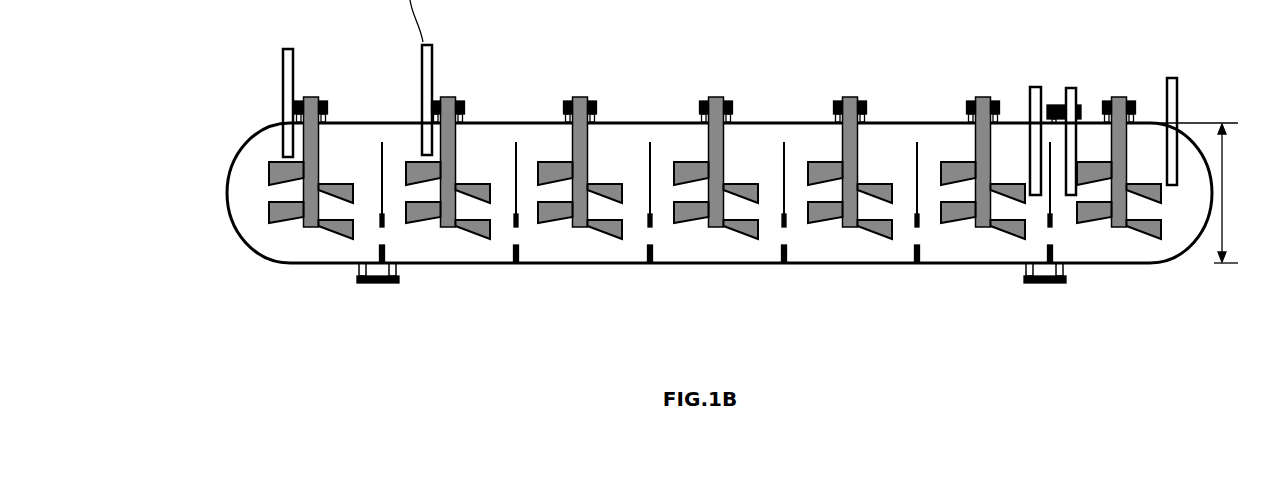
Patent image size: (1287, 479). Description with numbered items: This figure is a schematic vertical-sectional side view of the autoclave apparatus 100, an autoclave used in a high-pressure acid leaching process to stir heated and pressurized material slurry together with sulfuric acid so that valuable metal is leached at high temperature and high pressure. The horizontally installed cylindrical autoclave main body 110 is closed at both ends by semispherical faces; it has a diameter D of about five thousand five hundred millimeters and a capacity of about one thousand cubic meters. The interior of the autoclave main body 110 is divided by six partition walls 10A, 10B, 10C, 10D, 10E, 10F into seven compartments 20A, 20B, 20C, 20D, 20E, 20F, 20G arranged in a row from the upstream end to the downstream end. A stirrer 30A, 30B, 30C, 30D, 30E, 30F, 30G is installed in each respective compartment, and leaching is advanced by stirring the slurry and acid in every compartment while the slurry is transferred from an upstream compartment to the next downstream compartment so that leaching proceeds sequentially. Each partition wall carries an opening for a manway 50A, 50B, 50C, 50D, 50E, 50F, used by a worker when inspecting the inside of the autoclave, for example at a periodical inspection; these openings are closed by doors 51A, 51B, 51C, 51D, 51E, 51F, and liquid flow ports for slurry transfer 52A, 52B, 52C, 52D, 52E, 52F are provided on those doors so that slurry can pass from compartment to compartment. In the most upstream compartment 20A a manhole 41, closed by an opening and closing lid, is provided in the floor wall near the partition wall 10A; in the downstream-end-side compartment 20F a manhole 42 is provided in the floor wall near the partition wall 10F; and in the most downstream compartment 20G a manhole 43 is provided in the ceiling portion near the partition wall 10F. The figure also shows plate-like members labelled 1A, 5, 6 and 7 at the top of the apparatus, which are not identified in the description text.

The autoclave apparatus 100 is at (264, 292).
The autoclave main body 110 is at (234, 222).
The support plate 1A is at (282, 57).
The support plate 5 is at (1035, 86).
The support plate 6 is at (1069, 87).
The end plate 7 is at (1175, 78).
The manhole 43 is at (1078, 108).
The manhole 41 is at (376, 285).
The manhole 42 is at (1043, 287).
The diameter D is at (1200, 193).
The partition wall 10A is at (385, 140).
The partition wall 10B is at (516, 150).
The partition wall 10C is at (650, 150).
The partition wall 10D is at (785, 150).
The partition wall 10E is at (915, 155).
The partition wall 10F is at (1051, 208).
The compartment 20A is at (266, 150).
The compartment 20B is at (448, 162).
The compartment 20C is at (559, 246).
The compartment 20D is at (693, 245).
The compartment 20E is at (843, 245).
The compartment 20F is at (975, 248).
The compartment 20G is at (1143, 145).
The stirrer 30A is at (262, 183).
The stirrer 30B is at (468, 166).
The stirrer 30C is at (600, 166).
The stirrer 30D is at (731, 158).
The stirrer 30E is at (863, 159).
The stirrer 30F is at (955, 158).
The stirrer 30G is at (1137, 237).
The opening for a manway 50A is at (388, 230).
The opening for a manway 50B is at (522, 233).
The opening for a manway 50C is at (657, 235).
The opening for a manway 50D is at (790, 233).
The opening for a manway 50E is at (923, 234).
The opening for a manway 50F is at (1056, 233).
The door 51A is at (376, 224).
The door 51B is at (515, 242).
The door 51C is at (642, 248).
The door 51D is at (783, 245).
The door 51E is at (916, 250).
The door 51F is at (1046, 226).
The liquid flow port for slurry transfer 52A is at (377, 240).
The liquid flow port for slurry transfer 52B is at (512, 241).
The liquid flow port for slurry transfer 52C is at (646, 244).
The liquid flow port for slurry transfer 52D is at (779, 243).
The liquid flow port for slurry transfer 52E is at (912, 244).
The liquid flow port for slurry transfer 52F is at (1043, 243).